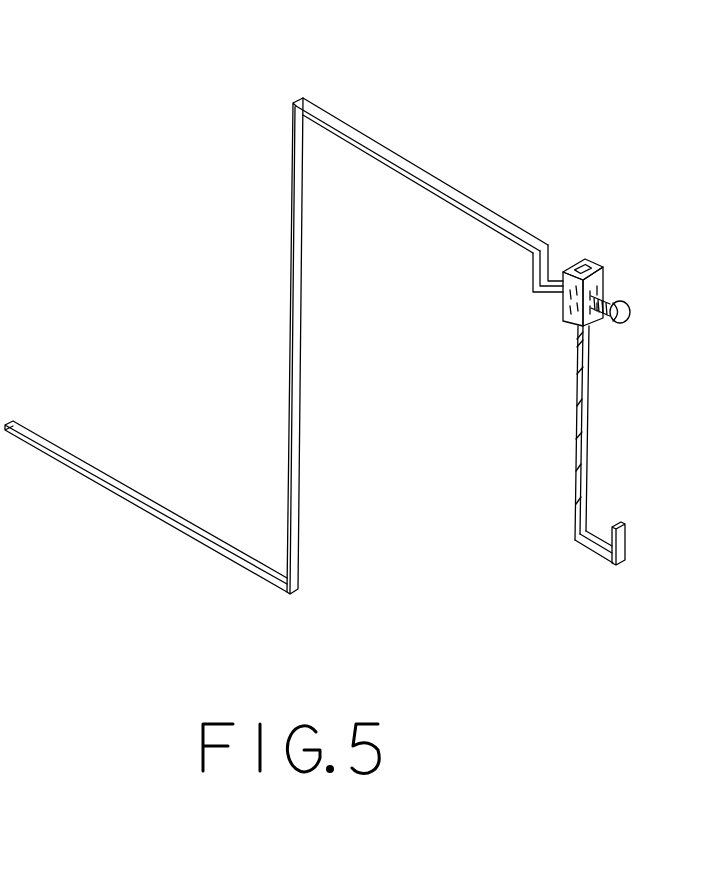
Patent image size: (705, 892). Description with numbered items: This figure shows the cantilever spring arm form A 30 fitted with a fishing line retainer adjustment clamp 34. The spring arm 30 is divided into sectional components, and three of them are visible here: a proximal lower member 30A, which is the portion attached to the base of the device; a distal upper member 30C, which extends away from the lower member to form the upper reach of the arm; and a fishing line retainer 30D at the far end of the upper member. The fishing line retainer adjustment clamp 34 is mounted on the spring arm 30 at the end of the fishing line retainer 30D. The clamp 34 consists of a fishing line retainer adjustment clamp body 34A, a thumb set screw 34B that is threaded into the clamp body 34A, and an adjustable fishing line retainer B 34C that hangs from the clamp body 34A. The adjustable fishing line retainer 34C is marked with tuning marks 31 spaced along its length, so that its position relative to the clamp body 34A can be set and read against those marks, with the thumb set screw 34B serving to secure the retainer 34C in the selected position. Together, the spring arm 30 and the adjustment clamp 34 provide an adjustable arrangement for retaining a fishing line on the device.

The cantilever spring arm form A 30 is at (285, 297).
The proximal lower member 30A is at (128, 493).
The distal upper member 30C is at (373, 148).
The fishing line retainer 30D is at (548, 267).
The fishing line retainer adjustment clamp 34 is at (577, 363).
The fishing line retainer adjustment clamp body 34A is at (568, 312).
The thumb set screw 34B is at (630, 302).
The adjustable fishing line retainer B 34C is at (580, 490).
The tuning marks 31 is at (580, 392).